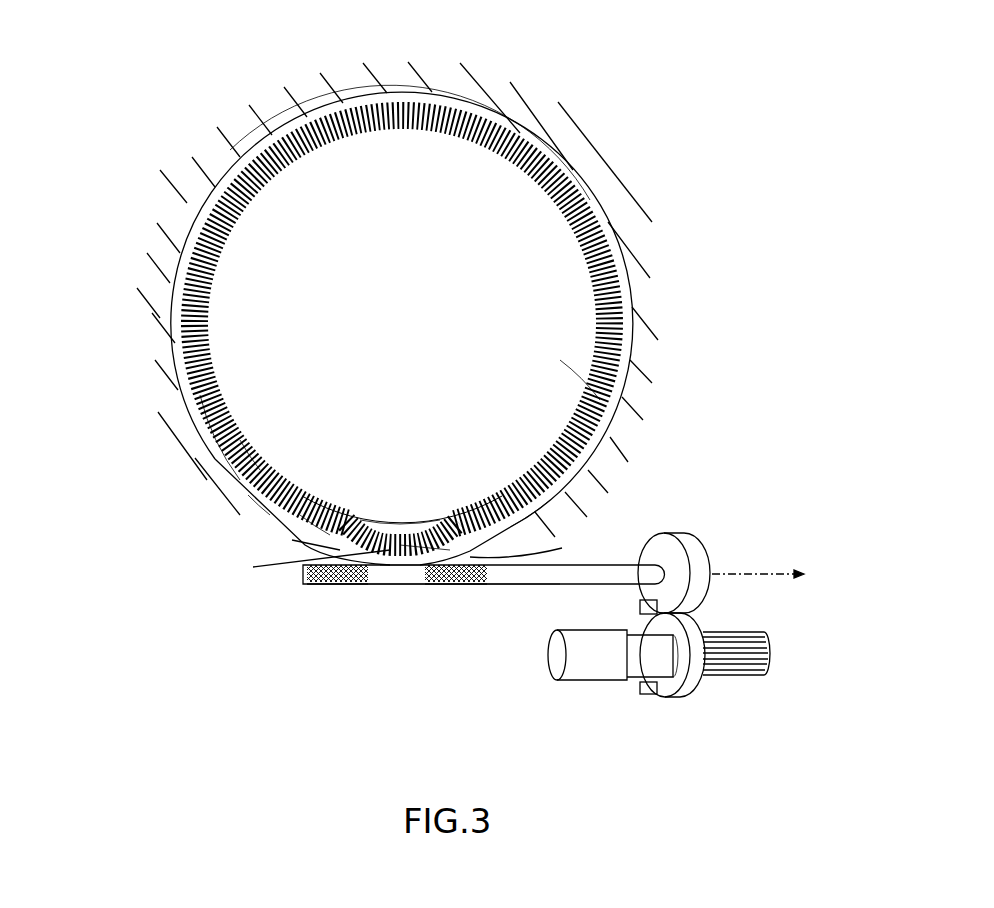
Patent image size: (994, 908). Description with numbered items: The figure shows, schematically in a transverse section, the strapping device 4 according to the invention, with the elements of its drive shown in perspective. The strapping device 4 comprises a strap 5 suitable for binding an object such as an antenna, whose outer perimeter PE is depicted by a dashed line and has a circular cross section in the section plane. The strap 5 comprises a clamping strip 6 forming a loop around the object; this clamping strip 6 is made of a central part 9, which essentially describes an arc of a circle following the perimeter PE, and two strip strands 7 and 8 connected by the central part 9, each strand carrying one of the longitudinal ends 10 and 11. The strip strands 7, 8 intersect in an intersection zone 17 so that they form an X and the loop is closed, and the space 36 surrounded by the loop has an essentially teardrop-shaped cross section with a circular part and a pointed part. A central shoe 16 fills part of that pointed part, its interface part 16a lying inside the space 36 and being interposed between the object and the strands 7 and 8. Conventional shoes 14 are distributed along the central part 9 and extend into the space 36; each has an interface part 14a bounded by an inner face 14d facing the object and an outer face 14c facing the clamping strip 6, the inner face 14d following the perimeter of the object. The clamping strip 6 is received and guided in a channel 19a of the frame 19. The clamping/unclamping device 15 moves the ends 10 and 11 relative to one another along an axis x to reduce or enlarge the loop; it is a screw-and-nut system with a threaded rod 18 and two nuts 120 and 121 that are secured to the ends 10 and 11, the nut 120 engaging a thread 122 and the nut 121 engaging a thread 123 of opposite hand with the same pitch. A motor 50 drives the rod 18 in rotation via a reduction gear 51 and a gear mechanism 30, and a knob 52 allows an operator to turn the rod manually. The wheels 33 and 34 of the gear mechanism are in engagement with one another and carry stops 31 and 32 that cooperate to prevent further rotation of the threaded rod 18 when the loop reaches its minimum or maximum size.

The strapping device 4 is at (129, 229).
The strap 5 is at (209, 192).
The central part 9 is at (197, 222).
The clamping strip 6 is at (187, 352).
The space 36 is at (294, 395).
The conventional shoe 14 is at (239, 485).
The inner face 14d is at (253, 460).
The outer face 14c is at (267, 500).
The interface part 14a is at (310, 504).
The central shoe 16 is at (400, 523).
The interface part 16a is at (418, 542).
The strip strand 8 is at (309, 542).
The longitudinal end 10 is at (306, 565).
The threaded rod 18 is at (300, 568).
The thread 122 is at (316, 588).
The nut 120 is at (345, 586).
The nut 121 is at (446, 586).
The thread 123 is at (478, 588).
The intersection zone 17 is at (400, 564).
The strip strand 7 is at (520, 534).
The longitudinal end 11 is at (524, 551).
The frame 19 is at (527, 128).
The channel 19a is at (602, 182).
The outer perimeter PE is at (586, 380).
The wheel of gear mechanism 33 is at (680, 533).
The gear mechanism 30 is at (718, 613).
The stop 31 is at (638, 607).
The wheel of gear mechanism 34 is at (676, 699).
The stop 32 is at (649, 695).
The motor 50 is at (549, 652).
The reduction gear 51 is at (639, 681).
The knob 52 is at (745, 676).
The clamping/unclamping device 15 is at (372, 715).